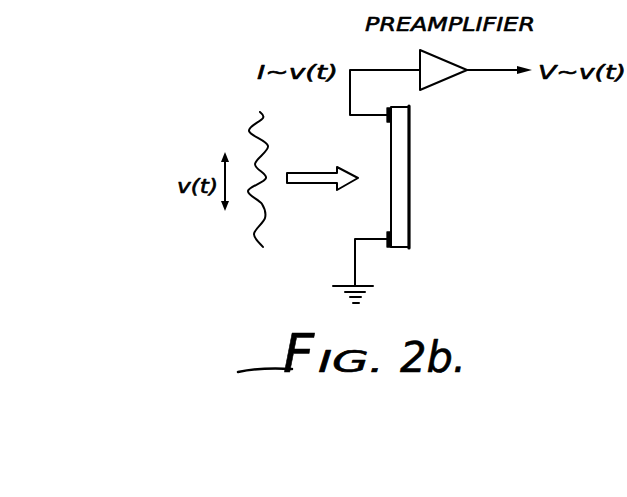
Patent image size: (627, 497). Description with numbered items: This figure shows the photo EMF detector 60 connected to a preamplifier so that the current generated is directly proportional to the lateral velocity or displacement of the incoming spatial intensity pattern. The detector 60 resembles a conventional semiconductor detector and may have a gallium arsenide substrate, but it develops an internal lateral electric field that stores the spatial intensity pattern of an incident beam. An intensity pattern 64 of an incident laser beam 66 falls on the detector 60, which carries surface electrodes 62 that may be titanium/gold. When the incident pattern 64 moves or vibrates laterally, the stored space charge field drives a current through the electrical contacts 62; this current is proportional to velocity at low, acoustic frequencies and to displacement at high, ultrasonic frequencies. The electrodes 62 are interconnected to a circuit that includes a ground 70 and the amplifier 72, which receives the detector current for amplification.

The photo EMF detector 60 is at (414, 151).
The surface electrodes 62 is at (386, 113).
The intensity pattern 64 is at (263, 247).
The incident laser beam 66 is at (304, 184).
The ground 70 is at (336, 287).
The amplifier 72 is at (448, 84).